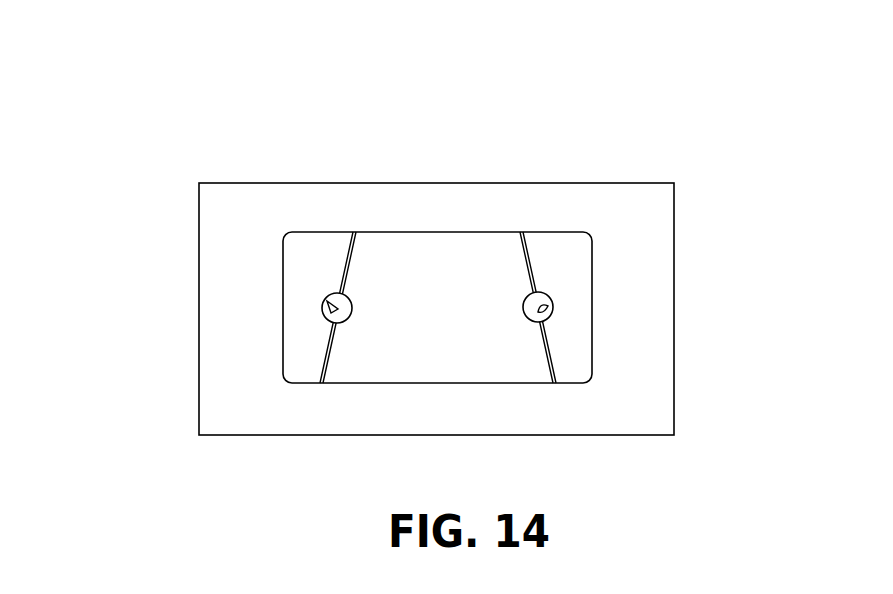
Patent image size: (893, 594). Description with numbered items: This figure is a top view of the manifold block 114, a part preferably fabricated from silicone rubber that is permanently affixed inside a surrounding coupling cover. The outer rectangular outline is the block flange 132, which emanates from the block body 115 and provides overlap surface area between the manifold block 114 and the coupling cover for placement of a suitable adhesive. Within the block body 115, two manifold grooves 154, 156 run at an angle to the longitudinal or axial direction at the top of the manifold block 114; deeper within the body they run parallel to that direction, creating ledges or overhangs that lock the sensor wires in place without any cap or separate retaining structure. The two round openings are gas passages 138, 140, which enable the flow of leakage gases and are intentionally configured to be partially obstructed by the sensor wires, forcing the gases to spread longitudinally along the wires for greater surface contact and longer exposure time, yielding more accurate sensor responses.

The manifold block 114 is at (376, 112).
The block flange 132 is at (257, 200).
The block body 115 is at (450, 325).
The manifold groove 154 is at (340, 288).
The manifold groove 156 is at (527, 266).
The gas passage 138 is at (330, 312).
The gas passage 140 is at (543, 316).